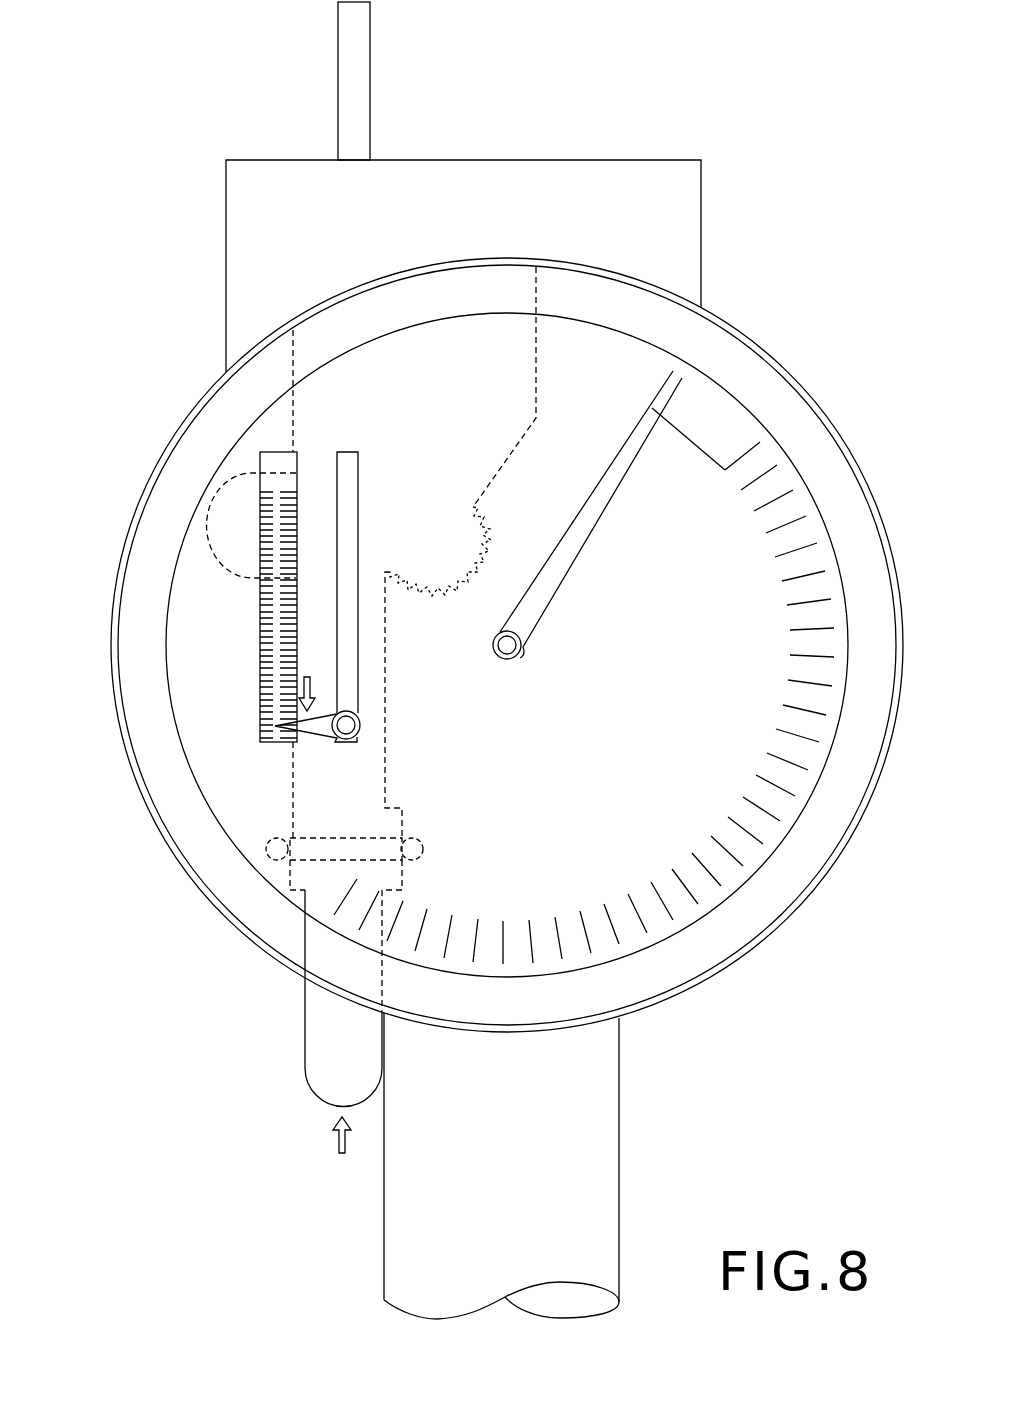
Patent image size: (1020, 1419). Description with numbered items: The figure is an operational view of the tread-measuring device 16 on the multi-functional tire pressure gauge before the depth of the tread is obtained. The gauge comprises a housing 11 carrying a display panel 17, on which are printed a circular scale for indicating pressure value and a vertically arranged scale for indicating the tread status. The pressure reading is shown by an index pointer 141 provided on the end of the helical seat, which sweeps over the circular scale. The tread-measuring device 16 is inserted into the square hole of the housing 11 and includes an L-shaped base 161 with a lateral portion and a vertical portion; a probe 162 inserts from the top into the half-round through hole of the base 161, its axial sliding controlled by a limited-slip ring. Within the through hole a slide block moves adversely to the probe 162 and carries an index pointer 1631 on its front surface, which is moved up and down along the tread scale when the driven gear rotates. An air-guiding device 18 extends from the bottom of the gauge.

The housing 11 is at (180, 448).
The display panel 17 is at (237, 443).
The tread-measuring device 16 is at (463, 186).
The base 161 is at (246, 180).
The probe 162 is at (305, 1009).
The index pointer 1631 is at (322, 728).
The index pointer 141 is at (528, 588).
The air-guiding device 18 is at (607, 1140).